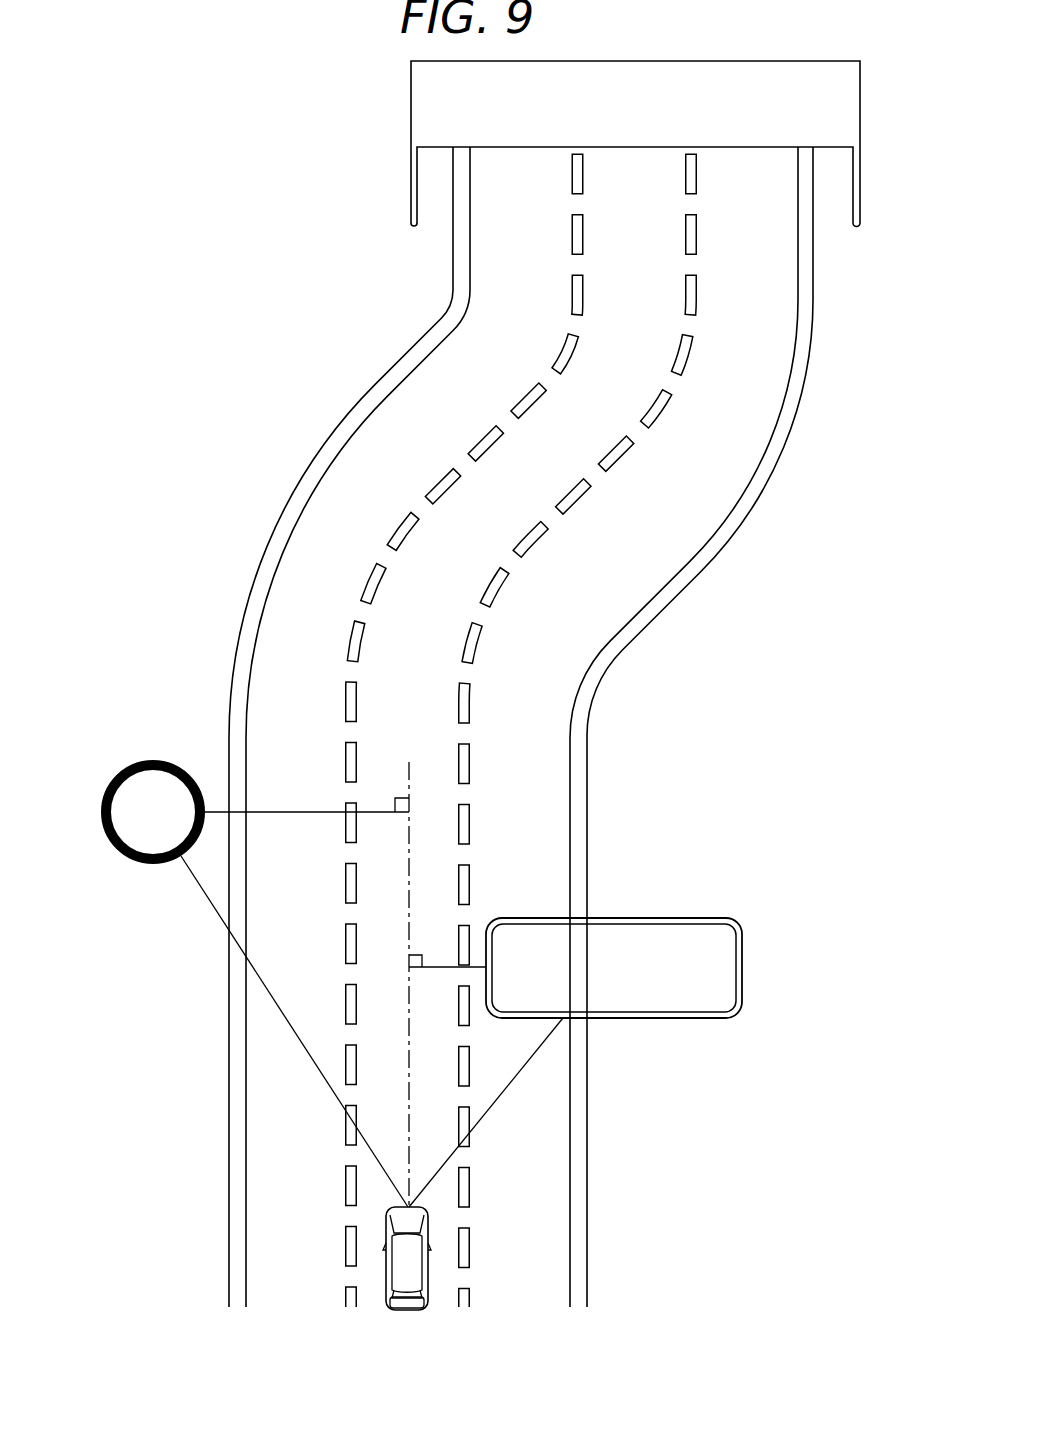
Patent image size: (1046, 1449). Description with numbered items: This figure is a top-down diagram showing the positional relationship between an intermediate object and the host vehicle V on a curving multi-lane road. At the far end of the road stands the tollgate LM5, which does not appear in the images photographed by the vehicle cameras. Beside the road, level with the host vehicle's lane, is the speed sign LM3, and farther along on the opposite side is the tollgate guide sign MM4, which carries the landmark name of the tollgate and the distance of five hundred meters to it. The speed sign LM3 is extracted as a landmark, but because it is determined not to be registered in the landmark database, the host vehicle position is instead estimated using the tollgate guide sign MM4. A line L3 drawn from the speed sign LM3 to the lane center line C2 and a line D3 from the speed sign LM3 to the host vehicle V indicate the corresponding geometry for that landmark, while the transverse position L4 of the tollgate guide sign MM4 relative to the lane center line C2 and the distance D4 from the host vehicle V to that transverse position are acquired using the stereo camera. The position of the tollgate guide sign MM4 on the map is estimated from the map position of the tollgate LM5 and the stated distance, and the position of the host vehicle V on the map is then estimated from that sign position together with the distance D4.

The tollgate LM5 is at (410, 110).
The speed sign LM3 is at (130, 762).
The lane center line C2 is at (407, 915).
The lateral distance to landmark LM3 L3 is at (307, 797).
The tollgate guide sign MM4 is at (693, 918).
The transverse position of the tollgate guide sign L4 is at (447, 978).
The distance from vehicle to LM3 D3 is at (294, 1031).
The distance D4 is at (486, 1112).
The host vehicle V is at (411, 1310).